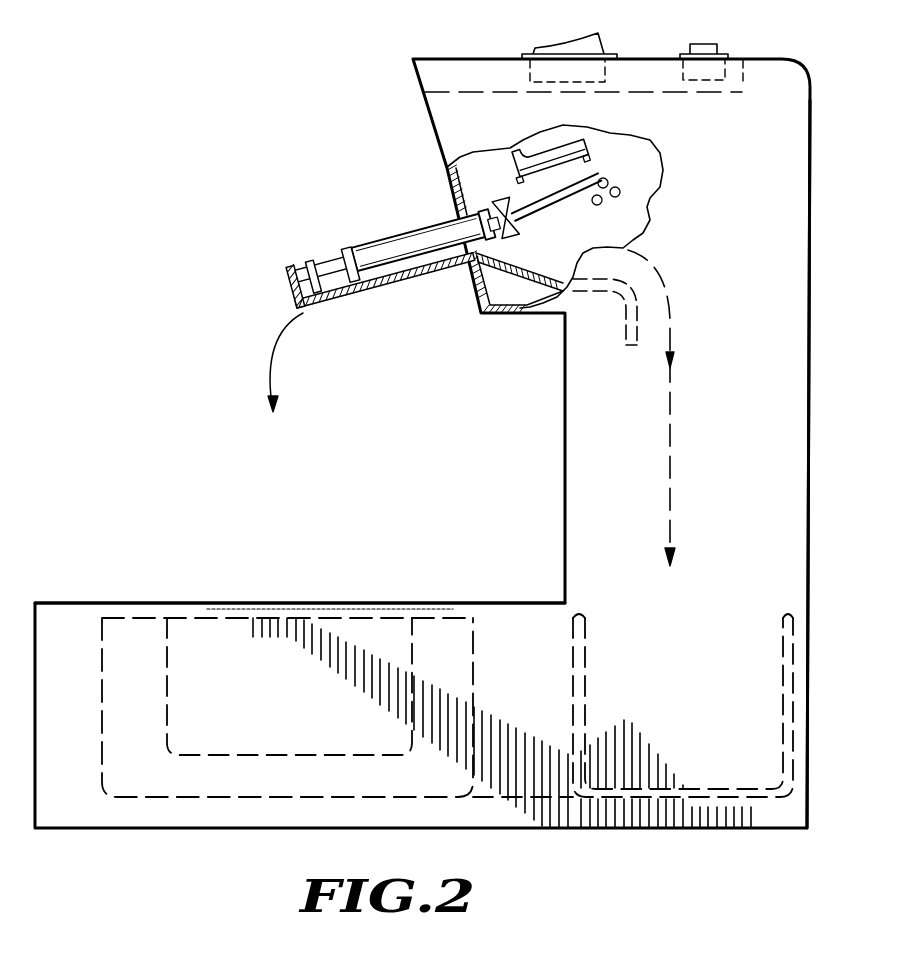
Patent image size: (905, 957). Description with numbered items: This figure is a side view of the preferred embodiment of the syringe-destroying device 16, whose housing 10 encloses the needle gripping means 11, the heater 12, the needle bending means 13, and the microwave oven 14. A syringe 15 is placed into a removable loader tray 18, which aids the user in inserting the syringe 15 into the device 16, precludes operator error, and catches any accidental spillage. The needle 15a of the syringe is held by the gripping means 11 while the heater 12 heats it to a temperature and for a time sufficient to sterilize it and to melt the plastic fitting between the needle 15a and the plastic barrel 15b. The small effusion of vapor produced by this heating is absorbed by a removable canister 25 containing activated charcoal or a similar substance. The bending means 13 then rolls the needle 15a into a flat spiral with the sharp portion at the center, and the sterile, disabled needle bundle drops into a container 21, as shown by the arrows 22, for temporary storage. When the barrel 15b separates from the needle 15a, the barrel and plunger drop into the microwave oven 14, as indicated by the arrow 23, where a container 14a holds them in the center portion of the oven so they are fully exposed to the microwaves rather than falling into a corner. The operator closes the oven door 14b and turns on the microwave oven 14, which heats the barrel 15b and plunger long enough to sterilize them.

The housing 10 is at (778, 50).
The needle gripping means 11 is at (520, 230).
The heater 12 is at (512, 192).
The needle bending means 13 is at (613, 190).
The microwave oven 14 is at (450, 603).
The container 14a is at (167, 650).
The oven door 14b is at (127, 580).
The syringe 15 is at (412, 222).
The needle 15a is at (560, 208).
The barrel 15b is at (363, 243).
The device 16 is at (811, 204).
The loader tray 18 is at (287, 277).
The container 21 is at (782, 700).
The arrows 22 is at (673, 343).
The arrow 23 is at (282, 350).
The canister 25 is at (743, 82).